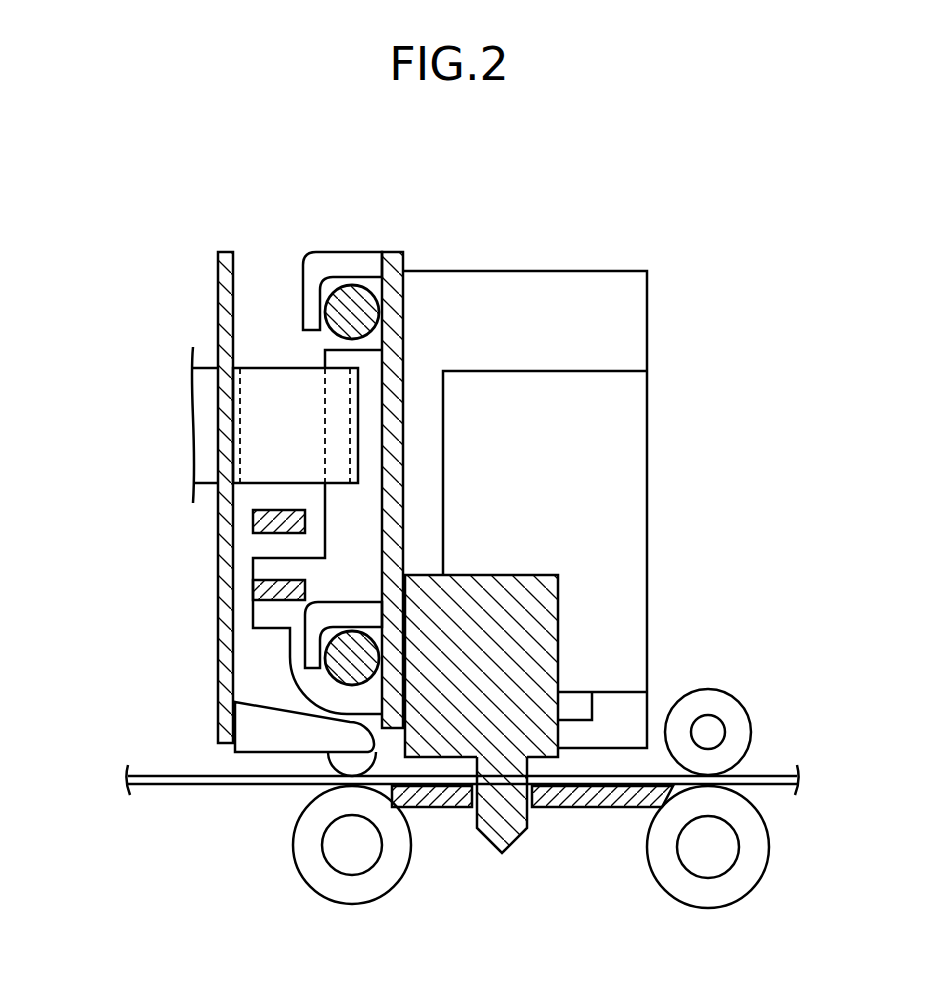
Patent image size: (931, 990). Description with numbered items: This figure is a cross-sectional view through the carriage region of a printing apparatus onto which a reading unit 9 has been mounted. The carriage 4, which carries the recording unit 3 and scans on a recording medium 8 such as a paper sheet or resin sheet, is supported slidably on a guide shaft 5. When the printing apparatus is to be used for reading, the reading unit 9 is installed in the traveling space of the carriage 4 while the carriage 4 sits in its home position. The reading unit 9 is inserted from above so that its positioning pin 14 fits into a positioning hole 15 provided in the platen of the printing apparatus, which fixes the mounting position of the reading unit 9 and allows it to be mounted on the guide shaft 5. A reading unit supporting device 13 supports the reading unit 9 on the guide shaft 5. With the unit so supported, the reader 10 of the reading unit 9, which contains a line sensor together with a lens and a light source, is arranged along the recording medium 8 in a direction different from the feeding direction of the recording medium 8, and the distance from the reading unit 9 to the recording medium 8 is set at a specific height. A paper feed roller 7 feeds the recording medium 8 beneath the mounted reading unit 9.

The recording unit 3 is at (622, 483).
The carriage 4 is at (548, 283).
The guide shaft 5 is at (335, 314).
The paper feed roller 7 is at (318, 883).
The recording medium 8 is at (776, 777).
The reading unit 9 is at (404, 367).
The reader 10 is at (553, 630).
The supporting device 13 is at (346, 265).
The positioning pin 14 is at (515, 830).
The positioning hole 15 is at (472, 810).